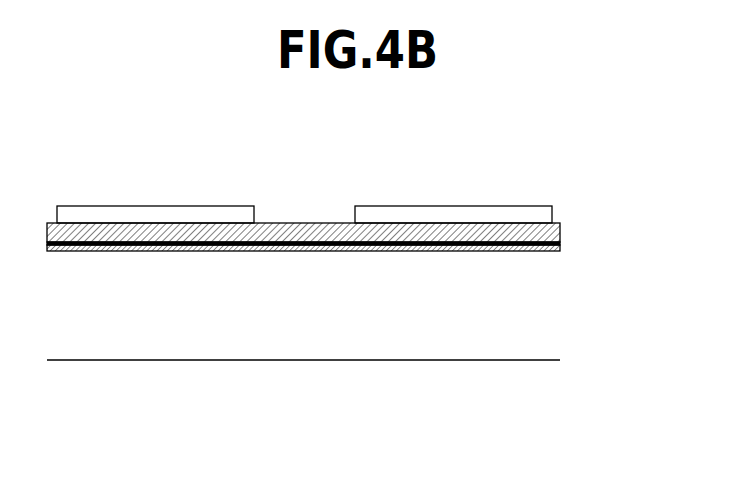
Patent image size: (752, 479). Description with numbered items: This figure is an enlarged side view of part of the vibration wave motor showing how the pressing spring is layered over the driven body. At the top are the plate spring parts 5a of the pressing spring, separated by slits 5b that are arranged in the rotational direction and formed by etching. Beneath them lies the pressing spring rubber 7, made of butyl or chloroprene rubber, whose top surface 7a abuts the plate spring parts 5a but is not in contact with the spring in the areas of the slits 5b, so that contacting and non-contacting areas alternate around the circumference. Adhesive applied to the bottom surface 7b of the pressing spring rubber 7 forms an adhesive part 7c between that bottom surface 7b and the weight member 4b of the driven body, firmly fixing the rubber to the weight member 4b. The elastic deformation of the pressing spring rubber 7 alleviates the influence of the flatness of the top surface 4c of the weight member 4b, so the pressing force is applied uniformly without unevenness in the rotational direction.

The pressing spring rubber 7 is at (383, 250).
The top surface of the pressing spring rubber 7a is at (553, 219).
The bottom surface of the pressing spring rubber 7b is at (560, 228).
The adhesive part 7c is at (520, 253).
The plate spring parts 5a is at (159, 218).
The slits 5b is at (354, 217).
The weight member 4b is at (437, 338).
The top surface of the weight member 4c is at (335, 253).